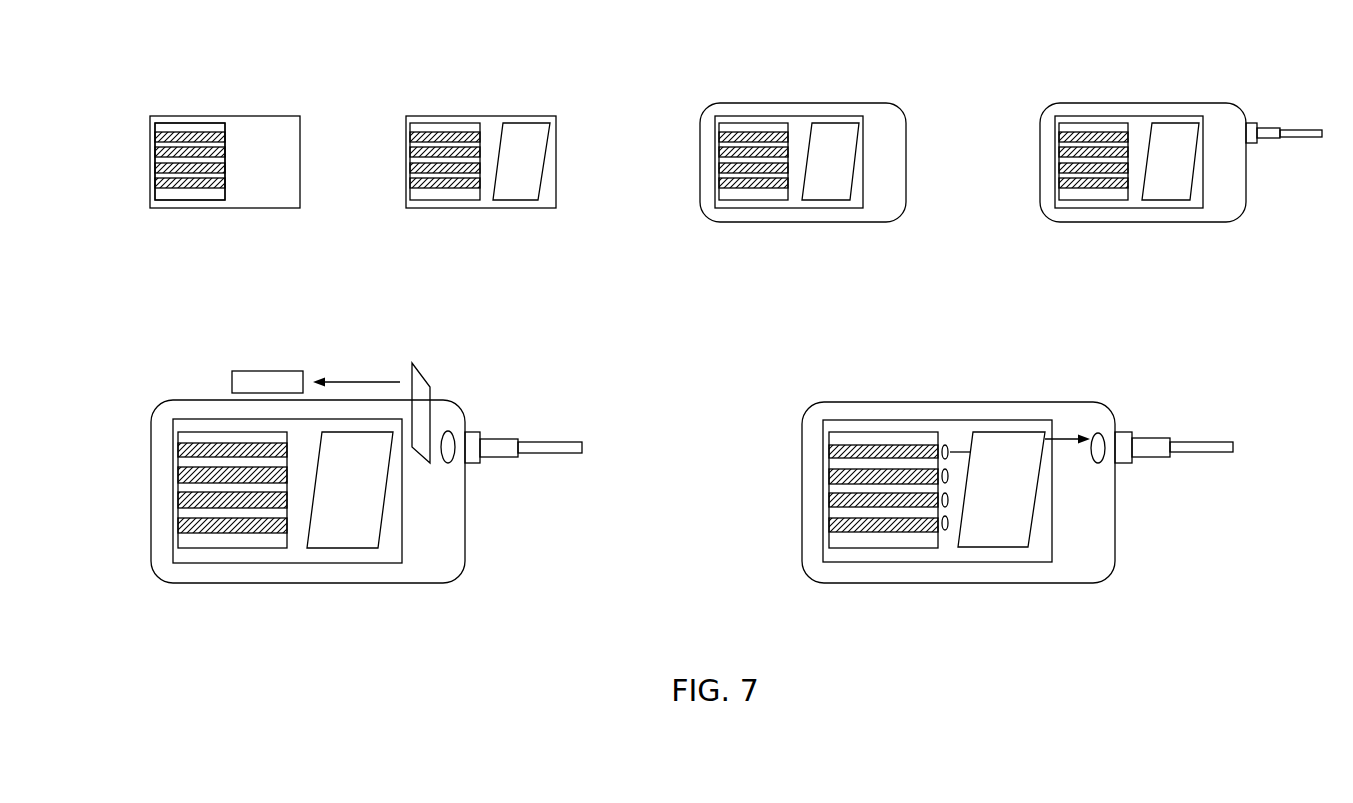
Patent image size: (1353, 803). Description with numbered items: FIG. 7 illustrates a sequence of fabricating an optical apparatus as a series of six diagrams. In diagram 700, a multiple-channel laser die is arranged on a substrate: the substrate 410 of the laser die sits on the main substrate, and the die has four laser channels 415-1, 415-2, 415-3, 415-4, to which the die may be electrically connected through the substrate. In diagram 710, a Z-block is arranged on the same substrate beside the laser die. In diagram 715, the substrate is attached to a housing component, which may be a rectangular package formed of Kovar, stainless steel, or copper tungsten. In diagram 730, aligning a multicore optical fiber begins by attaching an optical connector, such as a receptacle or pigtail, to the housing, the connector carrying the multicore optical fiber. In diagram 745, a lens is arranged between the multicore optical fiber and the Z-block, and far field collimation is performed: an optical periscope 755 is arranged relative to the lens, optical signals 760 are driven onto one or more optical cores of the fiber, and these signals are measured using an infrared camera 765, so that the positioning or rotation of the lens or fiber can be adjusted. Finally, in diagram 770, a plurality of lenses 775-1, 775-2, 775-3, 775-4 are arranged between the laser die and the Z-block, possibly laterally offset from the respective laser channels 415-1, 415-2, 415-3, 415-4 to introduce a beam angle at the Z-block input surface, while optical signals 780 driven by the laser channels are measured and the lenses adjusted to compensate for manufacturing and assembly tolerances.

The diagram 700 is at (185, 77).
The substrate of the laser die 410 is at (208, 200).
The laser channel 415-1 is at (153, 137).
The laser channel 415-2 is at (153, 152).
The laser channel 415-3 is at (153, 168).
The laser channel 415-4 is at (153, 183).
The diagram 710 is at (439, 77).
The diagram 715 is at (749, 77).
The diagram 730 is at (1091, 77).
The diagram 745 is at (185, 364).
The optical periscope 755 is at (425, 398).
The optical signals 760 is at (357, 381).
The infrared (IR) camera 765 is at (262, 371).
The diagram 770 is at (829, 367).
The lens 775-1 is at (946, 445).
The lens 775-2 is at (948, 478).
The lens 775-3 is at (948, 502).
The lens 775-4 is at (948, 530).
The optical signals 780 is at (1070, 439).